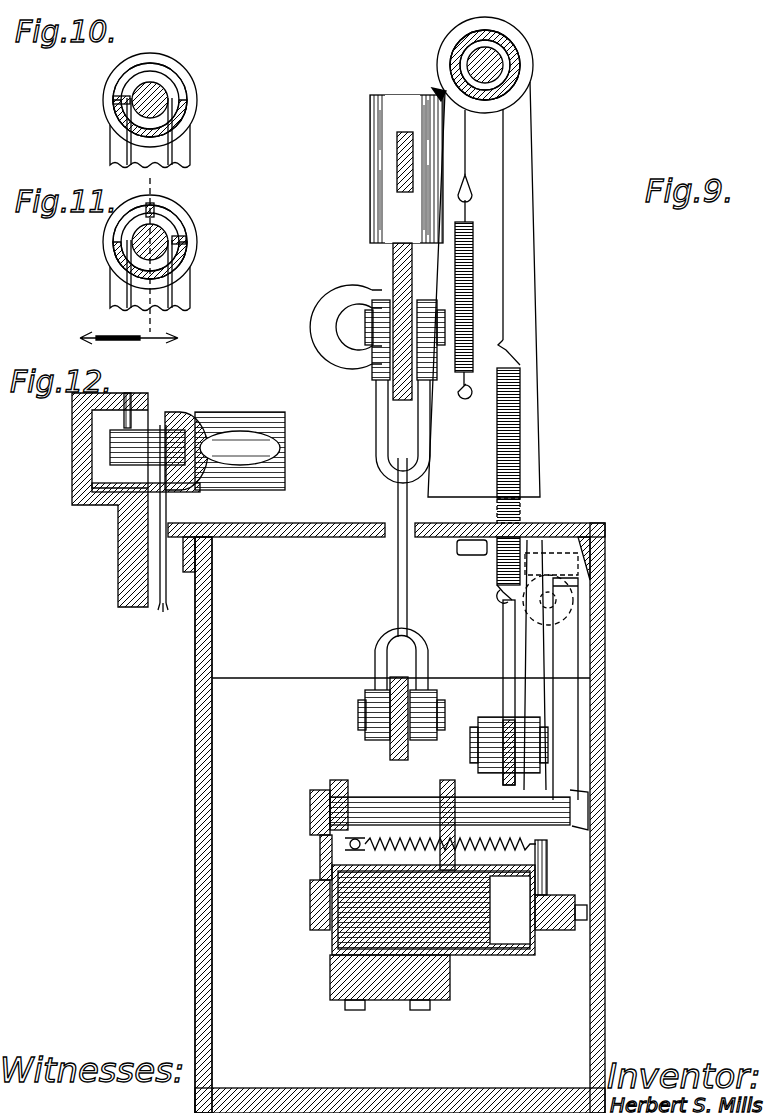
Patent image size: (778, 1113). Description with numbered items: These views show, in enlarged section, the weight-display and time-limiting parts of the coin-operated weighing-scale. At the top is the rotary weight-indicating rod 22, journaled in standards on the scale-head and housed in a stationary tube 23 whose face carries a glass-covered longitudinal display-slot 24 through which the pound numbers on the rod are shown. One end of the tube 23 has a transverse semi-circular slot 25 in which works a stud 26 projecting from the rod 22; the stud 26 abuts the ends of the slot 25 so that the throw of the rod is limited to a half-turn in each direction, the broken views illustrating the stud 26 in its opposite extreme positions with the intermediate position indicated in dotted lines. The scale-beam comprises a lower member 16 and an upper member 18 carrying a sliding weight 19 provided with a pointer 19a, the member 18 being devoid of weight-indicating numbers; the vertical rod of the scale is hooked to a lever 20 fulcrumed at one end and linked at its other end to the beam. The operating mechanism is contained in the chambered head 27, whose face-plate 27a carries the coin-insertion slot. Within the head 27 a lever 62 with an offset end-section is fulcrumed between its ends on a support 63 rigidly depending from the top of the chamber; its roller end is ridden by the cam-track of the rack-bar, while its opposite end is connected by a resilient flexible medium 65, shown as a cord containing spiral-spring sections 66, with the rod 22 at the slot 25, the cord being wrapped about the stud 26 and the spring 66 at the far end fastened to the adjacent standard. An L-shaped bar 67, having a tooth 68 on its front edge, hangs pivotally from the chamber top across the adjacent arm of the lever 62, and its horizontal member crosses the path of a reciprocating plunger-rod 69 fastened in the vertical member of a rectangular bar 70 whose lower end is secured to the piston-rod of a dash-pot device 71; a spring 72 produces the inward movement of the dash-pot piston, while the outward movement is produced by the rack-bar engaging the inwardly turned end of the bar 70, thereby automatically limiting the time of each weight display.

In FIG. 9, the lower member 16 is at (393, 266).
In FIG. 9, the upper member 18 is at (397, 175).
In FIG. 9, the sliding weight 19 is at (375, 148).
In FIG. 9, the pointer 19a is at (436, 94).
In FIG. 9, the lever 20 is at (380, 672).
In FIG. 10, the rod 22 is at (163, 90).
In FIG. 11, the rod 22 is at (164, 232).
In FIG. 12, the rod 22 is at (110, 452).
In FIG. 9, the rod 22 is at (515, 55).
In FIG. 10, the stationary tube 23 is at (186, 118).
In FIG. 11, the stationary tube 23 is at (186, 262).
In FIG. 12, the stationary tube 23 is at (268, 416).
In FIG. 9, the stationary tube 23 is at (520, 70).
In FIG. 12, the display-slot 24 is at (240, 436).
In FIG. 9, the display-slot 24 is at (452, 62).
In FIG. 10, the transverse semi-circular slot 25 is at (184, 92).
In FIG. 11, the transverse semi-circular slot 25 is at (184, 232).
In FIG. 12, the transverse semi-circular slot 25 is at (178, 418).
In FIG. 10, the stud 26 is at (114, 99).
In FIG. 11, the stud 26 is at (152, 208).
In FIG. 12, the stud 26 is at (160, 414).
In FIG. 9, the chambered head 27 is at (386, 818).
In FIG. 9, the face-plate 27a is at (195, 835).
In FIG. 9, the lever 62 is at (500, 700).
In FIG. 9, the support 63 is at (547, 700).
In FIG. 10, the resilient flexible medium 65 is at (173, 150).
In FIG. 11, the resilient flexible medium 65 is at (173, 296).
In FIG. 12, the resilient flexible medium 65 is at (168, 506).
In FIG. 9, the resilient flexible medium 65 is at (505, 150).
In FIG. 9, the spiral-spring sections 66 is at (474, 300).
In FIG. 9, the L-shaped bar 67 is at (566, 660).
In FIG. 9, the tooth 68 is at (503, 662).
In FIG. 9, the plunger-rod 69 is at (395, 812).
In FIG. 9, the rectangular bar 70 is at (318, 798).
In FIG. 9, the dash-pot device 71 is at (500, 957).
In FIG. 11, the spring 72 is at (129, 353).
In FIG. 9, the spring 72 is at (482, 840).